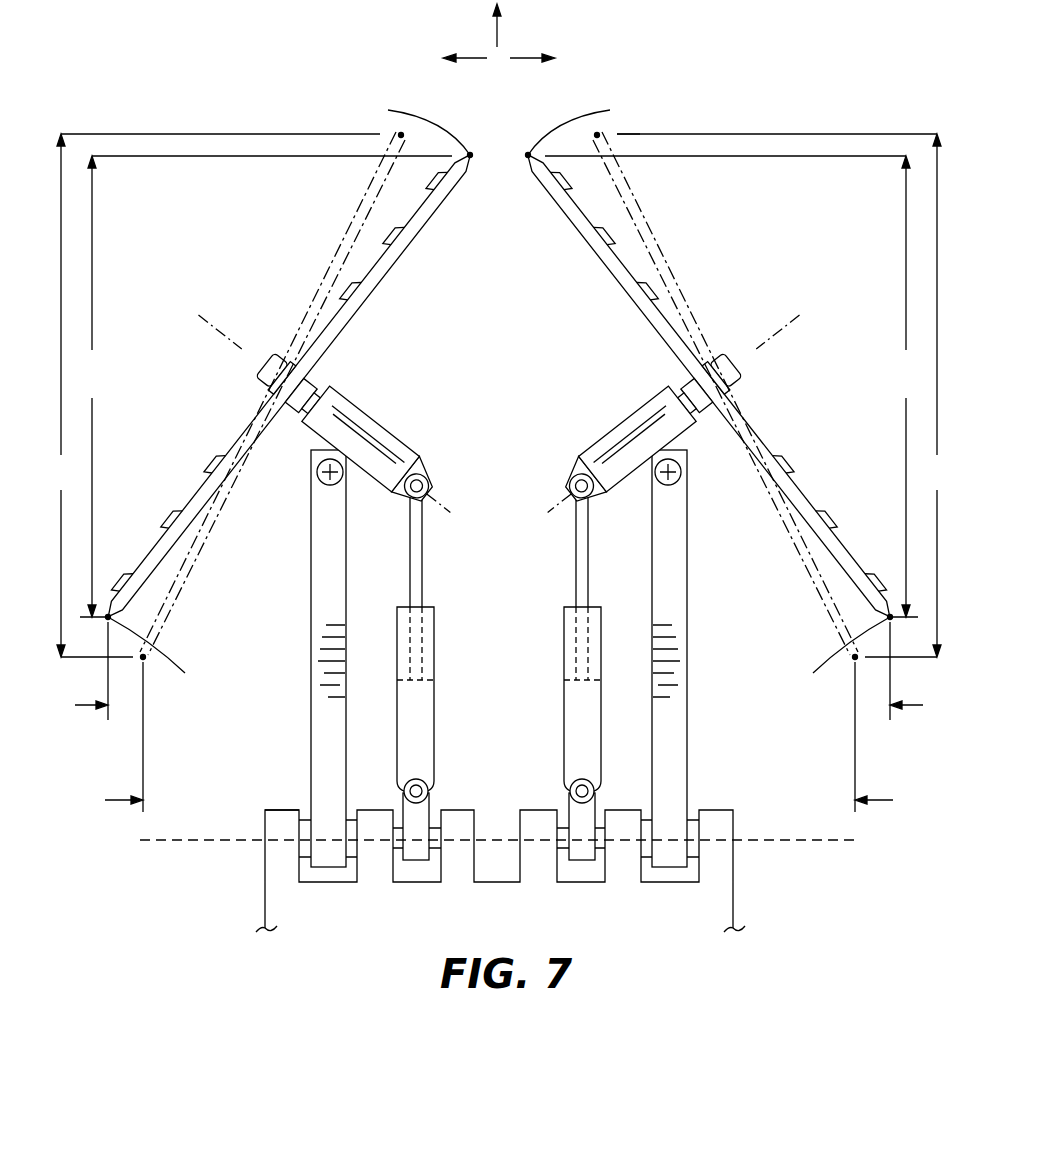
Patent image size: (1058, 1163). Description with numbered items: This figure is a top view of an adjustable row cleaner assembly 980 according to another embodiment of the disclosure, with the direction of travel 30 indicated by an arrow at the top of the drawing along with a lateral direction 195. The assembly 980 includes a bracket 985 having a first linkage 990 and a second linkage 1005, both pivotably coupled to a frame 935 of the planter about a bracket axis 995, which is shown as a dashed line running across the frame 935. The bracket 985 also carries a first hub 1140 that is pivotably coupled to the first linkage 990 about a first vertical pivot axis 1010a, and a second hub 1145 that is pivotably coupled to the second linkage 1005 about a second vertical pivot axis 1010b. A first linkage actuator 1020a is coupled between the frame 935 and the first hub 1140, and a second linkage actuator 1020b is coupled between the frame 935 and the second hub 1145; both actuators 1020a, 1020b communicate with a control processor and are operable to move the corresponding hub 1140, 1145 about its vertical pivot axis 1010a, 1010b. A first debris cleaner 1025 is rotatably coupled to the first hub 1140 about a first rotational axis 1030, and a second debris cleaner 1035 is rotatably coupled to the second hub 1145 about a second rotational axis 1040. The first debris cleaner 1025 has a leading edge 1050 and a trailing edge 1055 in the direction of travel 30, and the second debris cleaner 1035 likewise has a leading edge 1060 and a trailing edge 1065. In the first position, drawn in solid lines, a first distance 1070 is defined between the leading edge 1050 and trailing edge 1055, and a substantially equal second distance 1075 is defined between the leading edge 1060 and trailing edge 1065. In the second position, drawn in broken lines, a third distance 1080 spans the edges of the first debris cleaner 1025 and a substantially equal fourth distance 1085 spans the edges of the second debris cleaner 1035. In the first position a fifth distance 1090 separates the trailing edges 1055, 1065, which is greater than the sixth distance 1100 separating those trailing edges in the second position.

The direction of travel 30 is at (499, 38).
The lateral direction 195 is at (467, 58).
The adjustable row cleaner assembly 980 is at (797, 100).
The bracket 985 is at (780, 882).
The frame 935 is at (470, 810).
The bracket axis 995 is at (822, 838).
The second linkage 1005 is at (311, 715).
The first linkage 990 is at (687, 715).
The second vertical pivot axis 1010b is at (322, 486).
The first vertical pivot axis 1010a is at (678, 486).
The second linkage actuator 1020b is at (423, 590).
The first linkage actuator 1020a is at (575, 590).
The second debris cleaner 1035 is at (222, 472).
The first debris cleaner 1025 is at (776, 472).
The second rotational axis 1040 is at (228, 340).
The first rotational axis 1030 is at (770, 340).
The second hub 1145 is at (375, 421).
The first hub 1140 is at (623, 421).
The leading edge 1060 is at (401, 135).
The leading edge 1050 is at (597, 135).
The trailing edge 1065 is at (143, 657).
The trailing edge 1055 is at (855, 657).
The fourth distance 1085 is at (207, 395).
The second distance 1075 is at (261, 386).
The third distance 1080 is at (790, 395).
The first distance 1070 is at (736, 386).
The fifth distance 1090 is at (910, 706).
The sixth distance 1100 is at (880, 800).